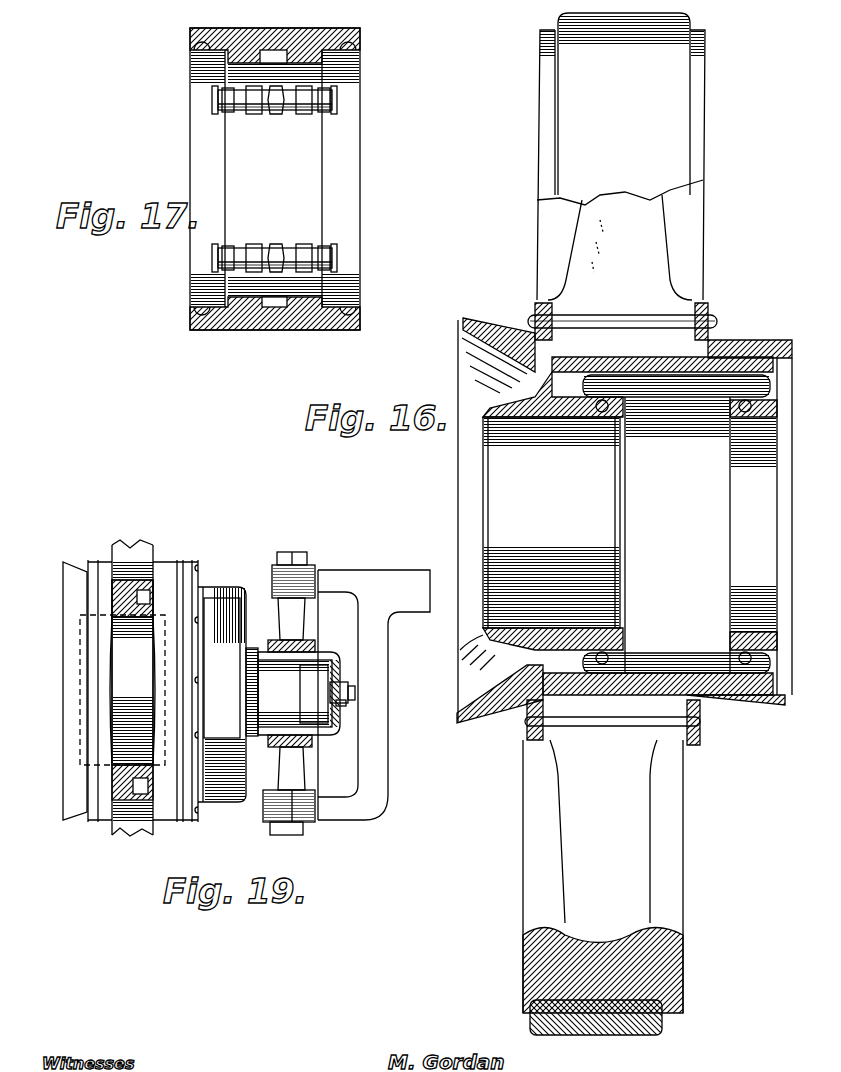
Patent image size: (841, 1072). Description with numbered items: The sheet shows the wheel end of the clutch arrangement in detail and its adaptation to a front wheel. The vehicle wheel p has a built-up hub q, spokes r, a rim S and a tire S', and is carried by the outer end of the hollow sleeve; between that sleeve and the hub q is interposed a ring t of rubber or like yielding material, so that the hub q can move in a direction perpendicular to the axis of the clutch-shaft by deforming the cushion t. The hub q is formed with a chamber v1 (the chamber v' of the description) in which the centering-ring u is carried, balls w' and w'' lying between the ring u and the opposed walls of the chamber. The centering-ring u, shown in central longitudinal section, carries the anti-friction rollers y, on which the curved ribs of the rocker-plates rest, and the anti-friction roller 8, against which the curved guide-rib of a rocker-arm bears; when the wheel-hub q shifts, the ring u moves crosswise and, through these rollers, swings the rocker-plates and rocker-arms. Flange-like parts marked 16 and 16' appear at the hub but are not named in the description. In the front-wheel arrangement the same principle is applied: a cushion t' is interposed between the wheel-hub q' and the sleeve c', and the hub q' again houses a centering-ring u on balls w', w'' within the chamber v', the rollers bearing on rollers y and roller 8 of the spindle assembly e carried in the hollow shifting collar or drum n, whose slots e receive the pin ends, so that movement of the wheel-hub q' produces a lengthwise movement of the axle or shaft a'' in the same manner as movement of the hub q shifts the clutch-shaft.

In FIG. 17, the centering-ring u is at (345, 8).
In FIG. 19, the centering-ring u is at (152, 597).
In FIG. 17, the anti-friction roller 8 is at (262, 112).
In FIG. 17, the anti-friction rollers y is at (270, 248).
In FIG. 16, the rim S is at (629, 521).
In FIG. 16, the tire S' is at (619, 529).
In FIG. 16, the spokes r is at (621, 517).
In FIG. 19, the spokes r is at (128, 542).
In FIG. 16, the conical flange 16 is at (500, 525).
In FIG. 16, the built-up hub q is at (648, 530).
In FIG. 16, the vehicle wheel p is at (740, 341).
In FIG. 16, the ring of rubber or like yielding material t is at (551, 522).
In FIG. 16, the chamber v1 is at (676, 524).
In FIG. 19, the conical flange 16' is at (63, 691).
In FIG. 19, the wheel-hub q' is at (219, 679).
In FIG. 19, the balls w' is at (96, 569).
In FIG. 19, the balls w'' is at (184, 692).
In FIG. 19, the cushion t' is at (122, 690).
In FIG. 19, the chamber v' is at (90, 704).
In FIG. 19, the hollow shifting collar or drum n is at (318, 668).
In FIG. 19, the longitudinal slots e is at (283, 705).
In FIG. 19, the axle or shaft a'' is at (376, 691).
In FIG. 19, the sleeve c' is at (379, 724).